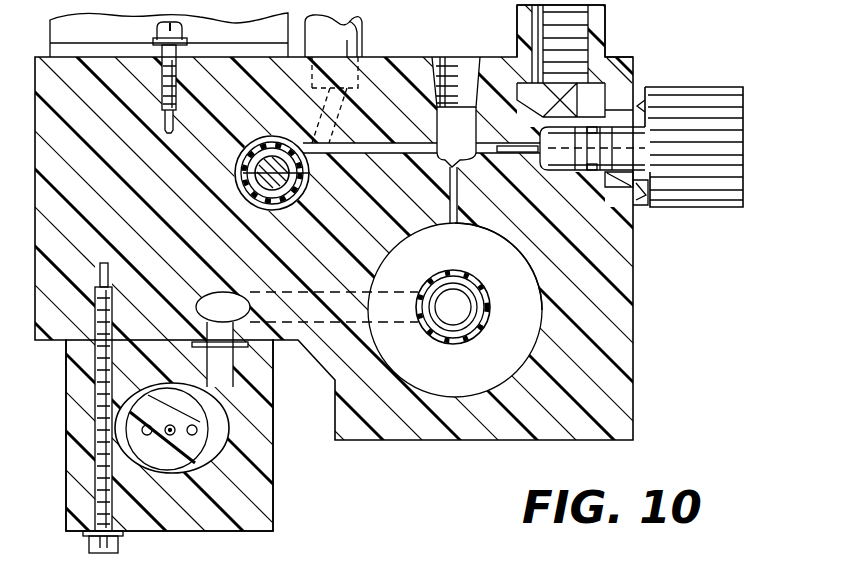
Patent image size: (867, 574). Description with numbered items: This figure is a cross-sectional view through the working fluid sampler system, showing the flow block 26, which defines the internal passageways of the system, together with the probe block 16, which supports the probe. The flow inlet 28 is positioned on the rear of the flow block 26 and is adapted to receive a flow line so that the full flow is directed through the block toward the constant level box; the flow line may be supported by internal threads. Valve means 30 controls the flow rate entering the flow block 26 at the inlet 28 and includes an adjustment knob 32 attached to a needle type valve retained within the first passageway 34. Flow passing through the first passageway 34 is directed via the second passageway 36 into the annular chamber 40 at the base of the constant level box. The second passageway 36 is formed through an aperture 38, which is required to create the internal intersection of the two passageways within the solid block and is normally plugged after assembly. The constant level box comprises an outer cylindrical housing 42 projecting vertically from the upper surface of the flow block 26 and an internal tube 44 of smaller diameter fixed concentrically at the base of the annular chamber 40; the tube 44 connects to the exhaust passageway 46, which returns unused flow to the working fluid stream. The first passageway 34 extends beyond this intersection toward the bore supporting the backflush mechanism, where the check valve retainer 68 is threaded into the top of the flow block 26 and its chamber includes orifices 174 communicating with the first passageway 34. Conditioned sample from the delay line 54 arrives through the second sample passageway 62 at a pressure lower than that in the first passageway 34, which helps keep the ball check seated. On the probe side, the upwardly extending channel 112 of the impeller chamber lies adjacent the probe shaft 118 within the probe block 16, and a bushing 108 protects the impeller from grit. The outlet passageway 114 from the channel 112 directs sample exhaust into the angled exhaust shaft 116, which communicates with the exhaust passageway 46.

The probe block 16 is at (266, 498).
The flow block 26 is at (400, 441).
The flow inlet 28 is at (603, 24).
The valve means 30 is at (574, 172).
The adjustment knob 32 is at (712, 198).
The first passageway 34 is at (353, 145).
The second passageway 36 is at (460, 199).
The aperture 38 is at (466, 58).
The annular chamber 40 is at (452, 385).
The outer cylindrical housing 42 is at (494, 232).
The internal tube 44 is at (518, 314).
The exhaust passageway 46 is at (468, 318).
The delay line 54 is at (358, 40).
The second sample passageway 62 is at (350, 100).
The check valve retainer 68 is at (291, 202).
The bushing 108 is at (310, 173).
The upwardly extending channel 112 is at (220, 424).
The outlet passageway 114 is at (253, 384).
The angled exhaust shaft 116 is at (407, 282).
The probe shaft 118 is at (177, 463).
The orifices 174 is at (243, 152).